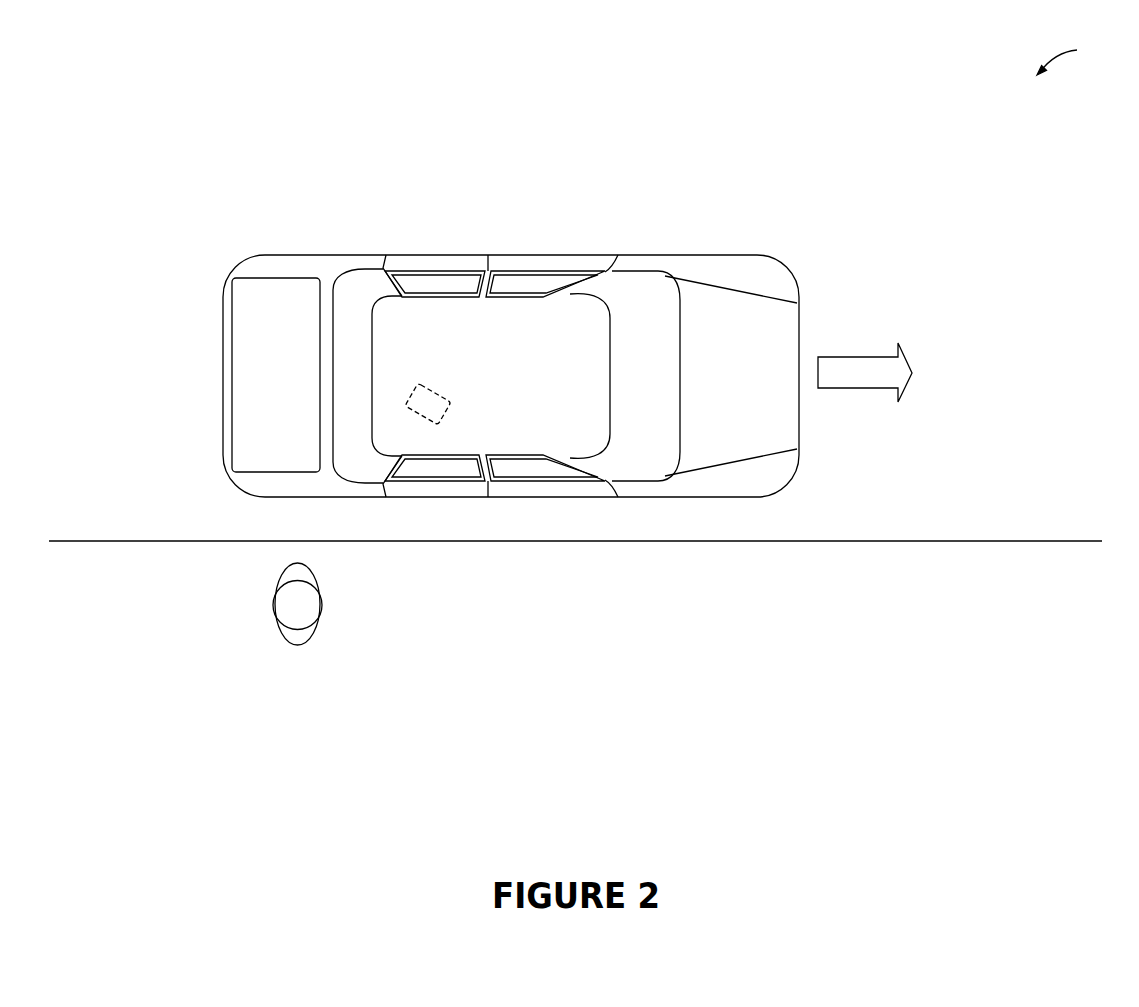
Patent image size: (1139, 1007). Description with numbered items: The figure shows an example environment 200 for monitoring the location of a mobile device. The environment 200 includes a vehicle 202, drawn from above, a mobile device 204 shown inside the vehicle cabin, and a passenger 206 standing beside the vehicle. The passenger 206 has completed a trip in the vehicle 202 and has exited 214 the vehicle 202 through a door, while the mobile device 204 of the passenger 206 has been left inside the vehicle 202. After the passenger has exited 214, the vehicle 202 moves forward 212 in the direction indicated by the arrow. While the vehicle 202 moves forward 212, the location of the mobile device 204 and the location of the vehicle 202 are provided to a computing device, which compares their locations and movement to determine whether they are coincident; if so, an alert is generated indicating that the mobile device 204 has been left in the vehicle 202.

The environment 200 is at (1079, 55).
The vehicle 202 is at (356, 255).
The mobile device 204 is at (450, 403).
The passenger 206 is at (298, 645).
The forward movement 212 is at (868, 351).
The exit 214 is at (447, 490).